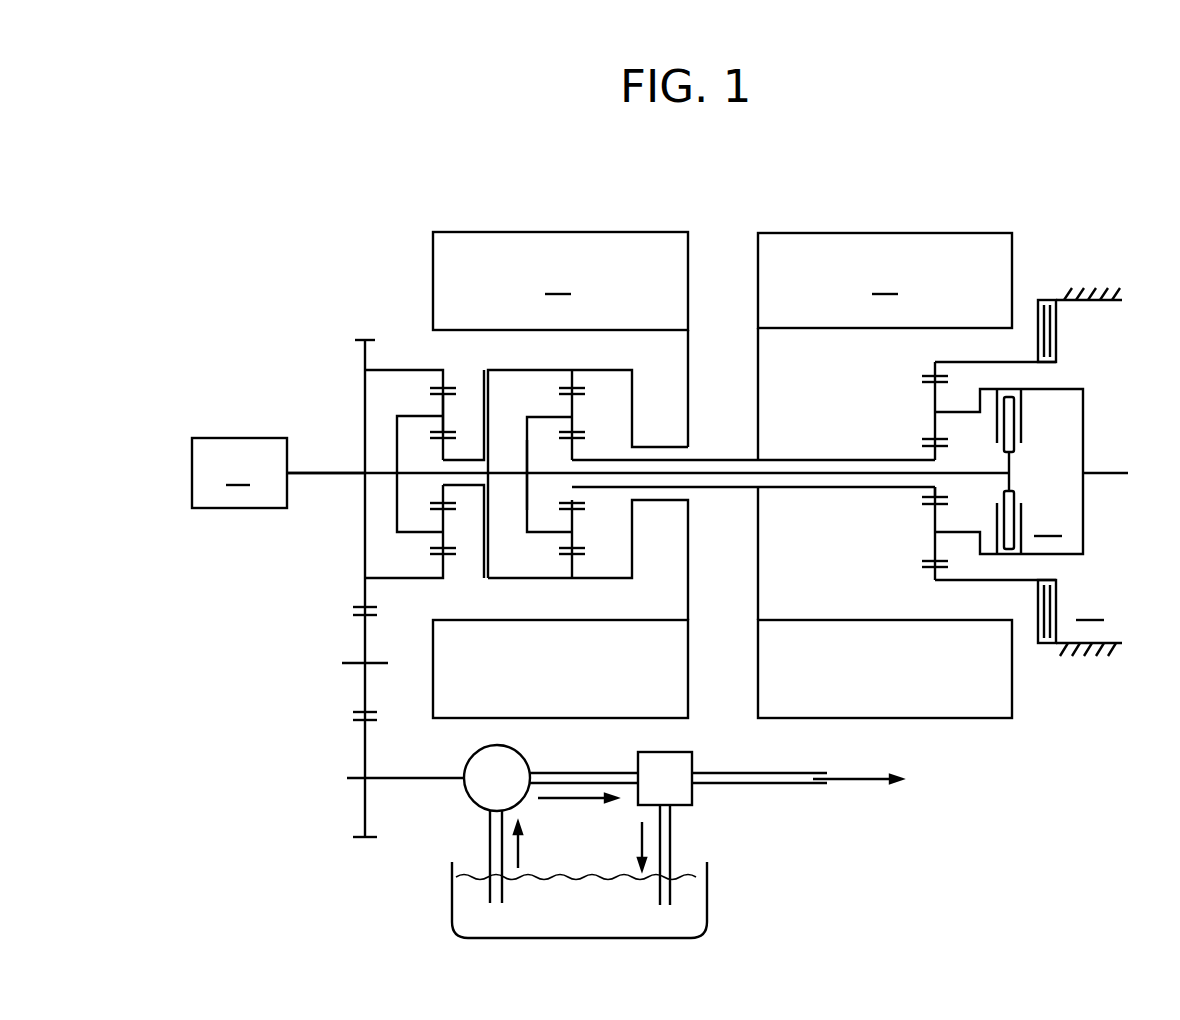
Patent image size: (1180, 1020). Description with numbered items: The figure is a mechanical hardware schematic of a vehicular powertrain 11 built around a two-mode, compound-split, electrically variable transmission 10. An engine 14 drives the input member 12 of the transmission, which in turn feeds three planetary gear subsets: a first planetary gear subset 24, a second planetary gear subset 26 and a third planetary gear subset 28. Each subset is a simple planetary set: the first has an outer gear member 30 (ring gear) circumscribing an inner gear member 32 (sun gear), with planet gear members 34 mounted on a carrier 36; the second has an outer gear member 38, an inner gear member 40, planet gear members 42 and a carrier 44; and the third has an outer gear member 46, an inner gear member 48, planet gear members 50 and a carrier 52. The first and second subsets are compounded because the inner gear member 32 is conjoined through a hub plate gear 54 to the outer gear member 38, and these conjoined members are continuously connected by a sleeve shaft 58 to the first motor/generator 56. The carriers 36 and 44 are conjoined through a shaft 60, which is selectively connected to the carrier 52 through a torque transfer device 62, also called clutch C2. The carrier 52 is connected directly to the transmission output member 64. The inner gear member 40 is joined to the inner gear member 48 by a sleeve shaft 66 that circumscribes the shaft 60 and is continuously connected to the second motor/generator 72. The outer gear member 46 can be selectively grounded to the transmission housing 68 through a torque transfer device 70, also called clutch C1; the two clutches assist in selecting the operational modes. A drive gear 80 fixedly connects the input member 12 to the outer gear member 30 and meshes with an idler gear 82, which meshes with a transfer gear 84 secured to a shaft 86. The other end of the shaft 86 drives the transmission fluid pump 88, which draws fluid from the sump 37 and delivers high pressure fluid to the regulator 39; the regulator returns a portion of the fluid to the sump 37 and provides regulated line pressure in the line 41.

The electrically variable transmission 10 is at (722, 212).
The vehicular powertrain 11 is at (298, 336).
The input member 12 is at (328, 468).
The engine 14 is at (239, 473).
The first planetary gear subset 24 is at (408, 353).
The second planetary gear subset 26 is at (598, 388).
The third planetary gear subset 28 is at (895, 393).
The outer gear member 30 is at (442, 386).
The inner gear member 32 is at (450, 444).
The planet gear members 34 is at (441, 402).
The carrier 36 is at (397, 508).
The sump 37 is at (707, 900).
The outer gear member 38 is at (563, 392).
The regulator 39 is at (693, 800).
The inner gear member 40 is at (565, 503).
The line 41 is at (825, 786).
The planet gear members 42 is at (577, 430).
The carrier 44 is at (527, 517).
The outer gear member 46 is at (933, 374).
The inner gear member 48 is at (944, 497).
The planet gear members 50 is at (930, 420).
The carrier 52 is at (1058, 388).
The hub plate gear 54 is at (489, 403).
The first motor/generator 56 is at (560, 475).
The sleeve shaft 58 is at (664, 442).
The shaft 60 is at (720, 472).
The torque transfer device 62 is at (1020, 410).
The transmission output member 64 is at (1100, 472).
The sleeve shaft 66 is at (778, 460).
The transmission housing 68 is at (1106, 290).
The torque transfer device 70 is at (1063, 322).
The second motor/generator 72 is at (885, 475).
The drive gear 80 is at (365, 546).
The idler gear 82 is at (363, 688).
The transfer gear 84 is at (363, 750).
The shaft 86 is at (403, 788).
The transmission fluid pump 88 is at (512, 768).
The first clutch C1 is at (1072, 611).
The second clutch C2 is at (1048, 522).